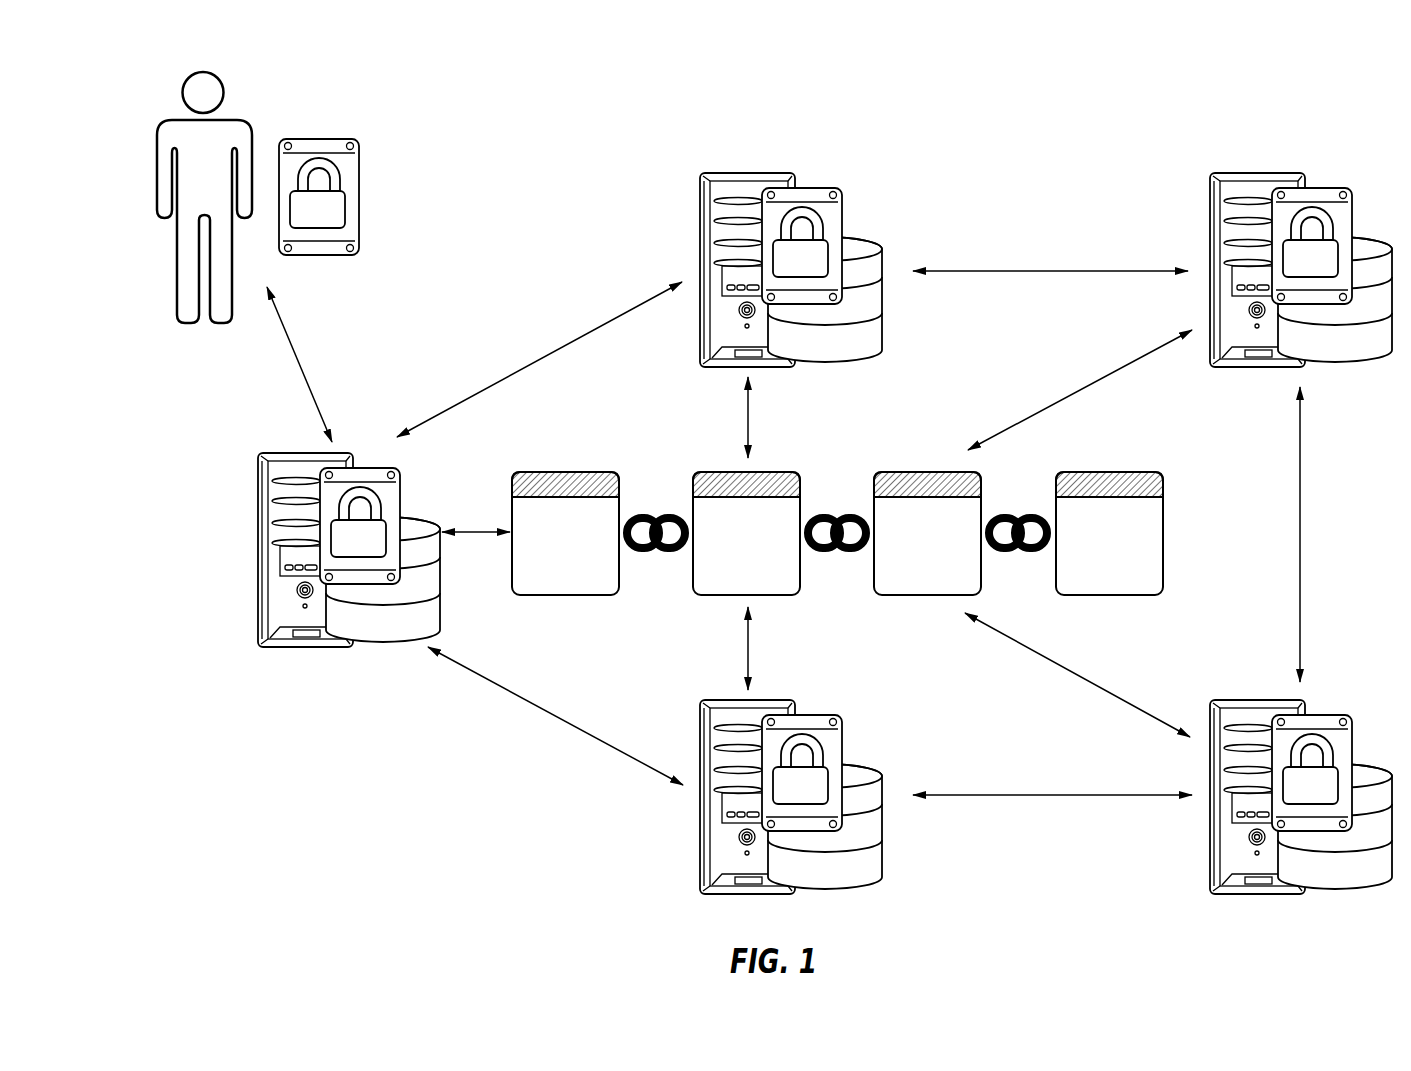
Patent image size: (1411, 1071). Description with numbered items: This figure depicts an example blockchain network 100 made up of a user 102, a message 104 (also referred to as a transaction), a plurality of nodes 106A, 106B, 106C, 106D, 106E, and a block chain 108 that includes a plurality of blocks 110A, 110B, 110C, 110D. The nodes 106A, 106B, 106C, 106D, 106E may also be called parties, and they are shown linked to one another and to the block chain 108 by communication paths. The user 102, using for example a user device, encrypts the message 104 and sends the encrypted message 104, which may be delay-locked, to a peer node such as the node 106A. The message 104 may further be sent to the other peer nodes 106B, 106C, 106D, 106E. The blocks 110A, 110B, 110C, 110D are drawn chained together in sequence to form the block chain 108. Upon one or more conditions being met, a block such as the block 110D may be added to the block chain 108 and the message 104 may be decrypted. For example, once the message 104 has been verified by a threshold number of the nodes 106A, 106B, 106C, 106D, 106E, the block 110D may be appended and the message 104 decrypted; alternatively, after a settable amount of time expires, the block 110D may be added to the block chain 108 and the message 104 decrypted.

The blockchain network 100 is at (1076, 100).
The user 102 is at (152, 105).
The message 104 is at (362, 146).
The node 106A is at (249, 616).
The node 106B is at (691, 867).
The node 106C is at (1201, 867).
The node 106D is at (1290, 163).
The node 106E is at (781, 163).
The block chain 108 is at (845, 474).
The block 110A is at (553, 470).
The block 110B is at (716, 470).
The block 110C is at (909, 470).
The block 110D is at (1119, 470).